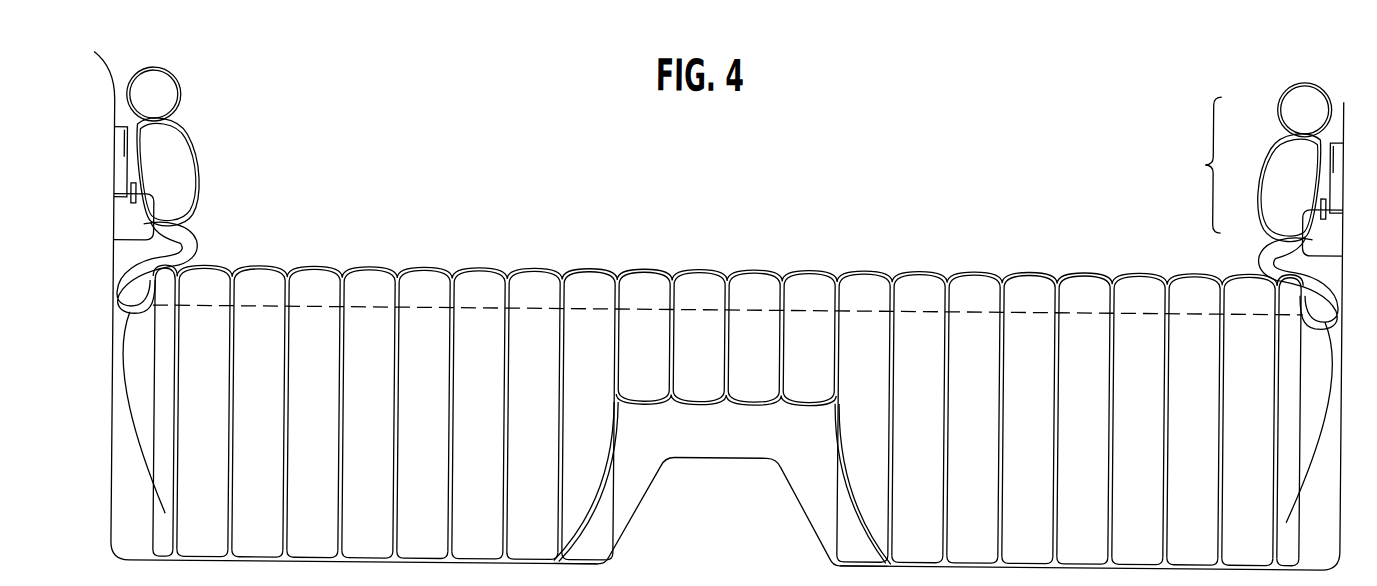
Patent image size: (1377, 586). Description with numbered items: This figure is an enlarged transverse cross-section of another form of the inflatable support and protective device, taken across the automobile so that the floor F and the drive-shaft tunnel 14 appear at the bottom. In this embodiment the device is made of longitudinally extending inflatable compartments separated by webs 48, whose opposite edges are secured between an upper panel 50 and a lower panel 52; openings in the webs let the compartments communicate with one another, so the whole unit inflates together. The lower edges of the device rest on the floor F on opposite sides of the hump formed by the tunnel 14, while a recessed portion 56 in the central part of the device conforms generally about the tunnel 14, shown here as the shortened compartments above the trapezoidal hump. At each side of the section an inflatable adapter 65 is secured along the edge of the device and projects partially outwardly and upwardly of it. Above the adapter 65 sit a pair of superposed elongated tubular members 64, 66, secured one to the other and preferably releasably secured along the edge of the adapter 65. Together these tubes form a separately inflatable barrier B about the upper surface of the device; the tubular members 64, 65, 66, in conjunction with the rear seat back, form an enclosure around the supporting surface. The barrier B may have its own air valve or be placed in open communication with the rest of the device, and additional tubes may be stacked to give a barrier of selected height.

The tunnel 14 is at (703, 453).
The webs 48 is at (1000, 416).
The upper panel 50 is at (978, 256).
The lower panel 52 is at (447, 559).
The recessed portion 56 is at (755, 405).
The tubular member 64 is at (1266, 199).
The inflatable adapter 65 is at (1327, 263).
The tubular member 66 is at (1276, 99).
The barrier B is at (1204, 165).
The floor F is at (583, 556).